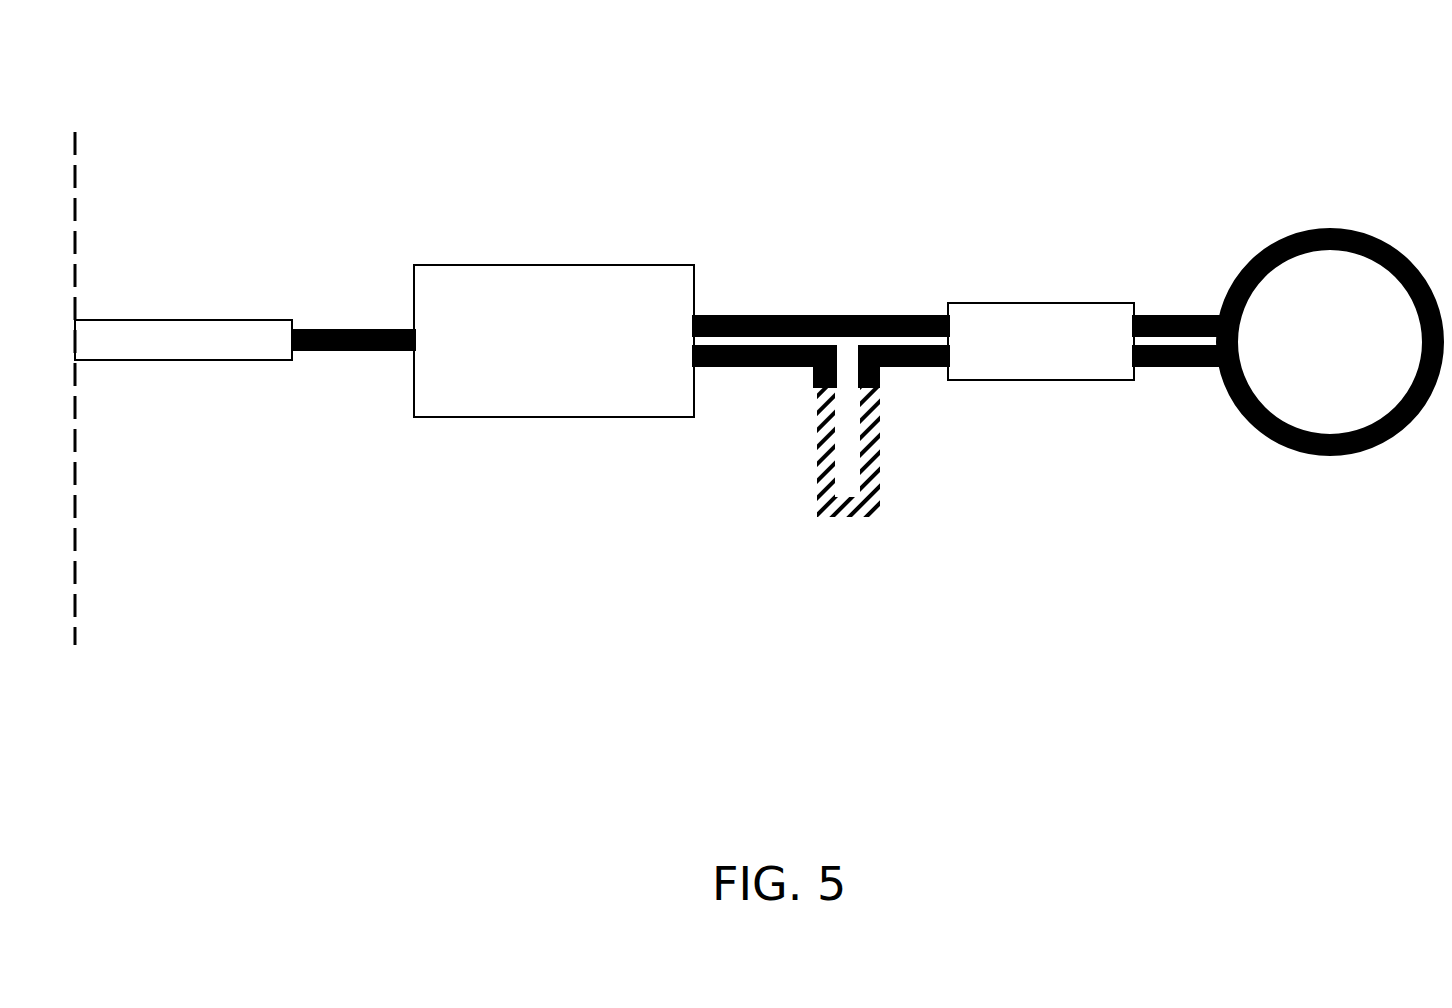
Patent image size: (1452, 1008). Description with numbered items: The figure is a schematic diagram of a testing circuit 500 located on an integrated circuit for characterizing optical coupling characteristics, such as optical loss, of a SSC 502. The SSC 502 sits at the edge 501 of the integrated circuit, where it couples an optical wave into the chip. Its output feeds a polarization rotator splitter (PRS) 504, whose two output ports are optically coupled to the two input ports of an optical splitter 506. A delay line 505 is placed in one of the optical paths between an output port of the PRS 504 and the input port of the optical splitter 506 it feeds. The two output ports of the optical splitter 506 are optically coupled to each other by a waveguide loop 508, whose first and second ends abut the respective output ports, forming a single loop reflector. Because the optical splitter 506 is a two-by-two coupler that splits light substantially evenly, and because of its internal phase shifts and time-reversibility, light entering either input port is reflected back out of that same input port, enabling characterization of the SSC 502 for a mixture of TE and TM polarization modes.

The testing circuit 500 is at (799, 78).
The edge 501 is at (75, 152).
The SSC 502 is at (183, 340).
The polarization rotator splitter (PRS) 504 is at (554, 341).
The delay line 505 is at (818, 467).
The optical splitter 506 is at (1041, 341).
The waveguide loop 508 is at (1270, 243).